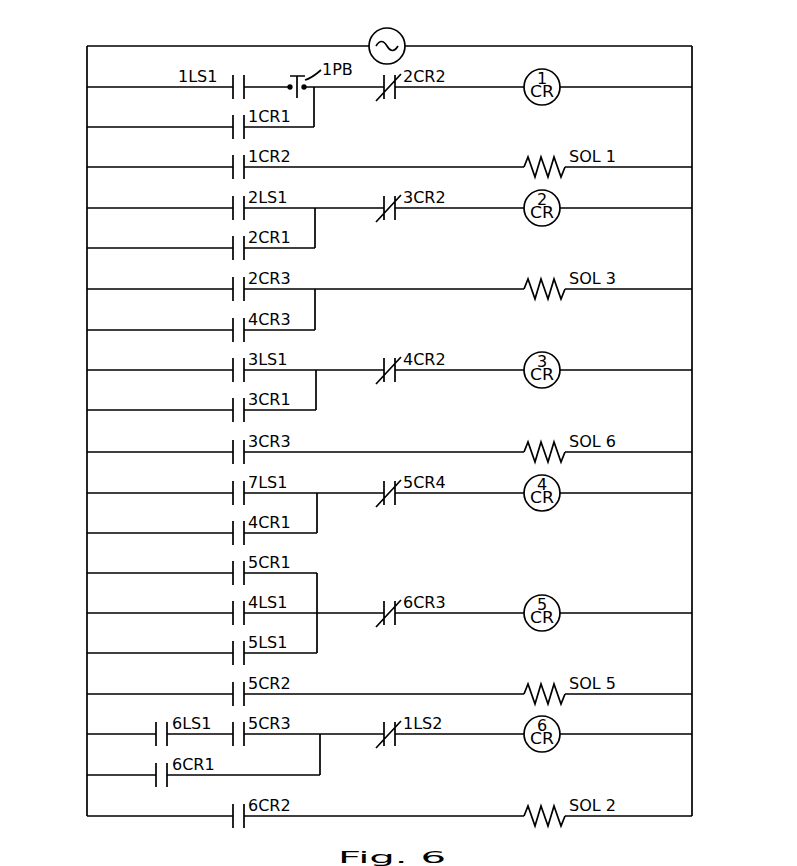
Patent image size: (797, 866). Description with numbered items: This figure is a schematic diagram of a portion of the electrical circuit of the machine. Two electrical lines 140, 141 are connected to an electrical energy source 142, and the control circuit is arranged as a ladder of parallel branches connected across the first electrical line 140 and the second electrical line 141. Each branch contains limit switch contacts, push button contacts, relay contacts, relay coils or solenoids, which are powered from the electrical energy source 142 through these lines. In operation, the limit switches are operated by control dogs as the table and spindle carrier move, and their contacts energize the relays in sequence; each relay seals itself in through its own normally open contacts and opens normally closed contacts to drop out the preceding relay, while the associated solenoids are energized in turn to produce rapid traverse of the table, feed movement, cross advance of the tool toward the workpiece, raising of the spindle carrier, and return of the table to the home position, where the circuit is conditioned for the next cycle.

The electrical line 140 is at (86, 80).
The electrical line 141 is at (692, 68).
The electrical energy source 142 is at (401, 33).